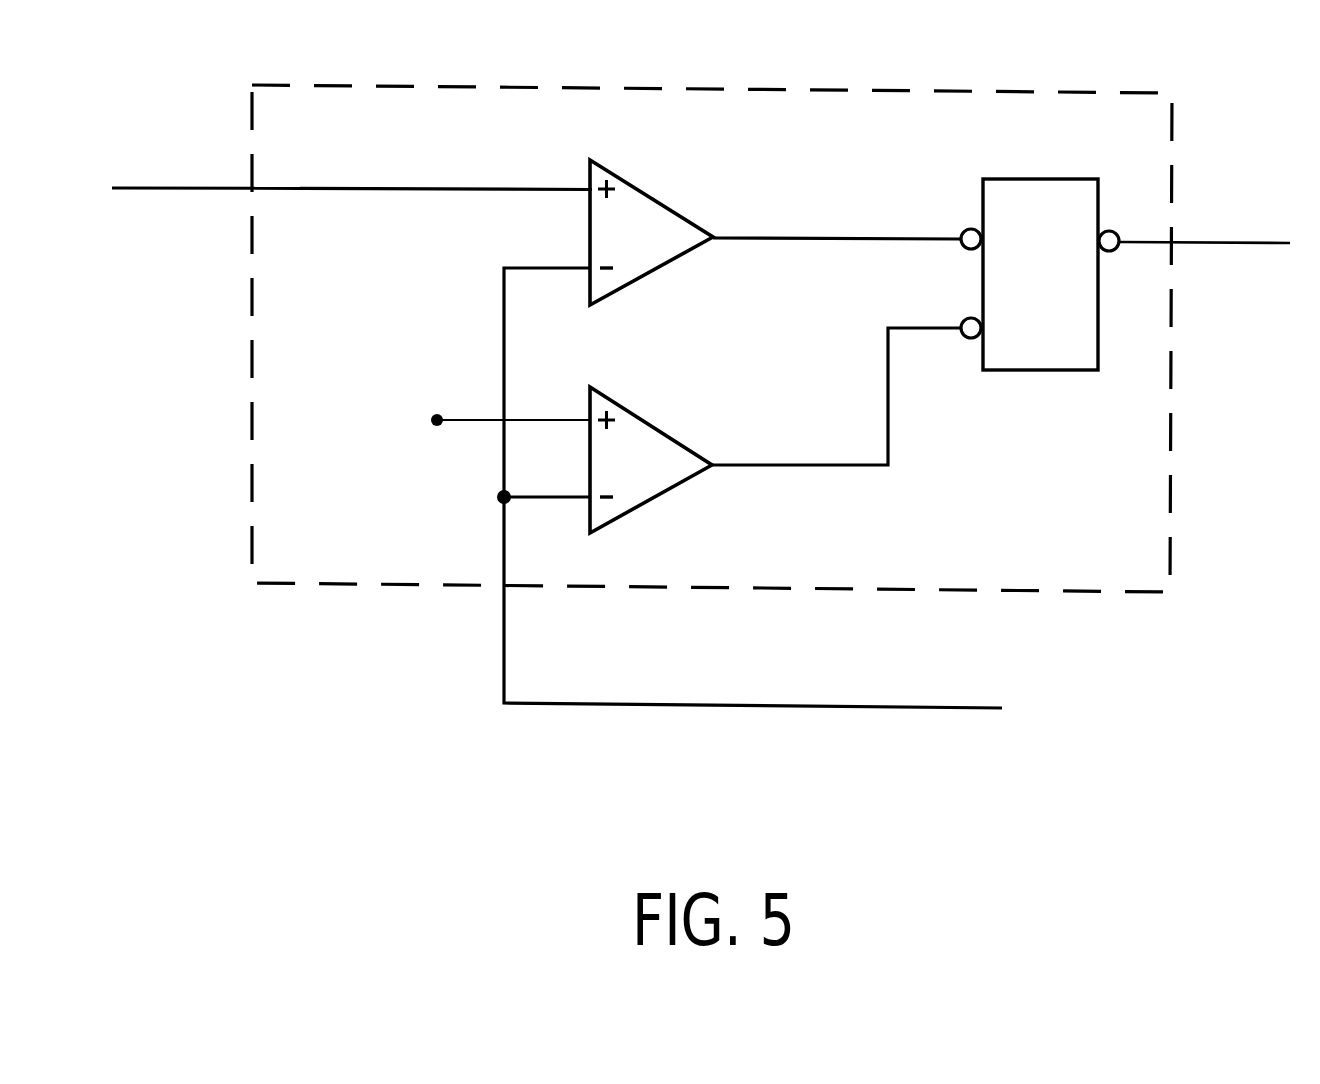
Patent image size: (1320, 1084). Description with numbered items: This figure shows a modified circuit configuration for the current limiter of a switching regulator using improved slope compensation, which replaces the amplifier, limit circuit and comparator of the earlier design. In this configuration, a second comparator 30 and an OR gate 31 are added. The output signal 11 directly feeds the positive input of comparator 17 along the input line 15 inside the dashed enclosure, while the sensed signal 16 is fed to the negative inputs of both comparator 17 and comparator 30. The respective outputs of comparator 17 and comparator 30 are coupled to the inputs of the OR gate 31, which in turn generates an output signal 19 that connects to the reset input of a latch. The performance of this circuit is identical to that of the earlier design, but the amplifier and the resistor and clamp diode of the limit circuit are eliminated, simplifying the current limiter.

The output signal 11 is at (155, 187).
The input line to comparator 15 is at (378, 186).
The sensed signal 16 is at (794, 707).
The comparator 17 is at (662, 202).
The output signal 19 is at (1237, 243).
The second comparator 30 is at (660, 432).
The OR gate 31 is at (1048, 372).